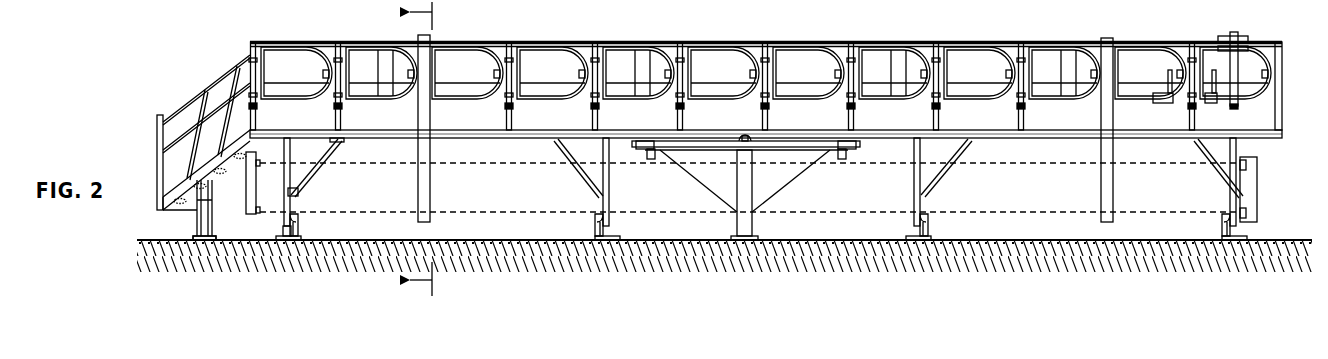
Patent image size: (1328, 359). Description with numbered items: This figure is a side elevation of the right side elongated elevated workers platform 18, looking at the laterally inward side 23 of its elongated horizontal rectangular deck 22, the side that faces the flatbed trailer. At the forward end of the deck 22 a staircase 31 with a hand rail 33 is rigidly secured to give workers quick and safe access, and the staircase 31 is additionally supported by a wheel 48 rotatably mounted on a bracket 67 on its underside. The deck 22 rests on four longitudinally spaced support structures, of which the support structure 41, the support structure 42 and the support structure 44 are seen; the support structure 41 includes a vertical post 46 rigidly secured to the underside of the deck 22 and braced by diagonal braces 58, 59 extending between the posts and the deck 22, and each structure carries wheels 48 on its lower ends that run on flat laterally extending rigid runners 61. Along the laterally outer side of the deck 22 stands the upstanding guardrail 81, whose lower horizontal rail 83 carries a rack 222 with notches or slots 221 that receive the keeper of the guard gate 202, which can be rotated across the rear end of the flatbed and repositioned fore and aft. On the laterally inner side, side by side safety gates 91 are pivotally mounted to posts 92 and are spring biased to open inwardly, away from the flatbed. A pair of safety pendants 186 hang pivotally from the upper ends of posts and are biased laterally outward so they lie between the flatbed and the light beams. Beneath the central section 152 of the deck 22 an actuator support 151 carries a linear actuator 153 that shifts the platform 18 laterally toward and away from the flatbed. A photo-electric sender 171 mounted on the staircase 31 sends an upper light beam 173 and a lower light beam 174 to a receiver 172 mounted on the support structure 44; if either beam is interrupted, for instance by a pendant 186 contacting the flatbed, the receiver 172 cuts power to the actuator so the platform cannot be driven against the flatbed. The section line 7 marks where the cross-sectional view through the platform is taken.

The section line 7- 7 is at (424, 162).
The right side elongated elevated workers platform 18 is at (418, 40).
The deck 22 is at (478, 124).
The laterally inward side 23 is at (525, 138).
The staircase 31 is at (190, 150).
The hand rail 33 is at (222, 82).
The support structure 41 is at (293, 196).
The support structure 42 is at (612, 195).
The support structure 44 is at (1229, 195).
The vertical post 46 is at (285, 236).
The wheel 48 is at (300, 226).
The diagonal brace 58 is at (340, 141).
The diagonal brace 59 is at (325, 153).
The rigid runner 61 is at (208, 241).
The bracket 67 is at (197, 222).
The guardrail 81 is at (923, 40).
The lower horizontal rail 83 is at (728, 42).
The safety gate 91 is at (294, 42).
The post 92 is at (262, 62).
The actuator support 151 is at (737, 231).
The central section 152 is at (800, 150).
The linear actuator 153 is at (715, 178).
The sender 171 is at (250, 202).
The receiver 172 is at (1257, 192).
The upper light beam 173 is at (993, 166).
The lower light beam 174 is at (1040, 209).
The safety pendant 186 is at (739, 113).
The guard gate 202 is at (1238, 34).
The slot 221 is at (1177, 92).
The rack 222 is at (1163, 92).